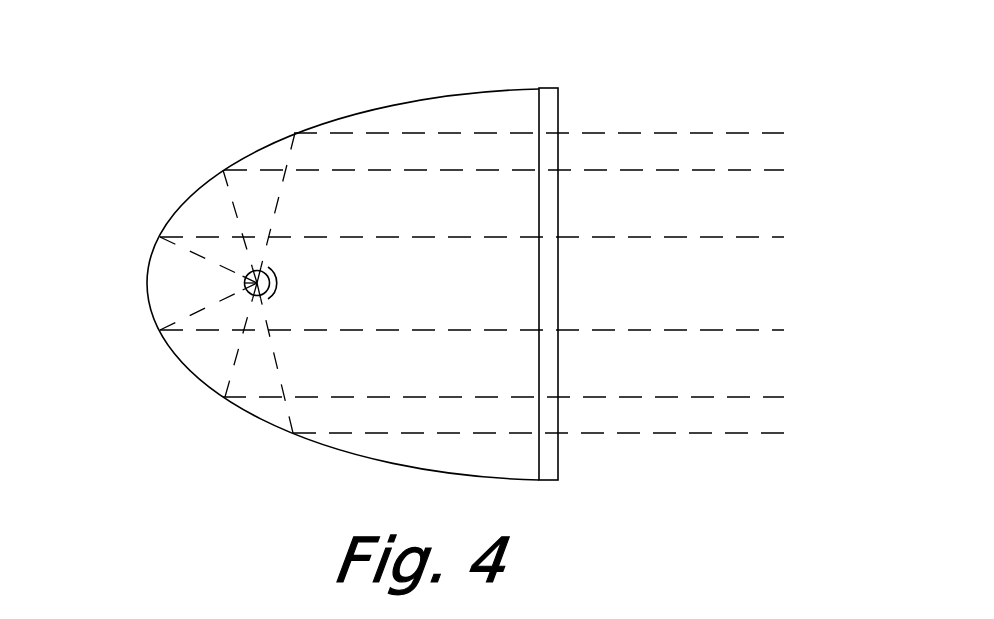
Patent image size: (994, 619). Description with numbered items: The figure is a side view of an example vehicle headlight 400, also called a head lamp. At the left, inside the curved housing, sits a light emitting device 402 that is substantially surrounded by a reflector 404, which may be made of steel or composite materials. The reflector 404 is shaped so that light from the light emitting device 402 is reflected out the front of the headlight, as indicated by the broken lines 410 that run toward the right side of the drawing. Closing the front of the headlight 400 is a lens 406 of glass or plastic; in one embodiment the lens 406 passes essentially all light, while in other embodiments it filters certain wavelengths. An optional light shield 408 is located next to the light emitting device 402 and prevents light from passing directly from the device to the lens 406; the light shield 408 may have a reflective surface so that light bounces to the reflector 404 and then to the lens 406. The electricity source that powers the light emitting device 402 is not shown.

The vehicle headlight 400 is at (197, 85).
The light emitting device 402 is at (244, 283).
The reflector 404 is at (385, 108).
The lens 406 is at (550, 93).
The light shield 408 is at (280, 289).
The broken lines 410 is at (722, 170).